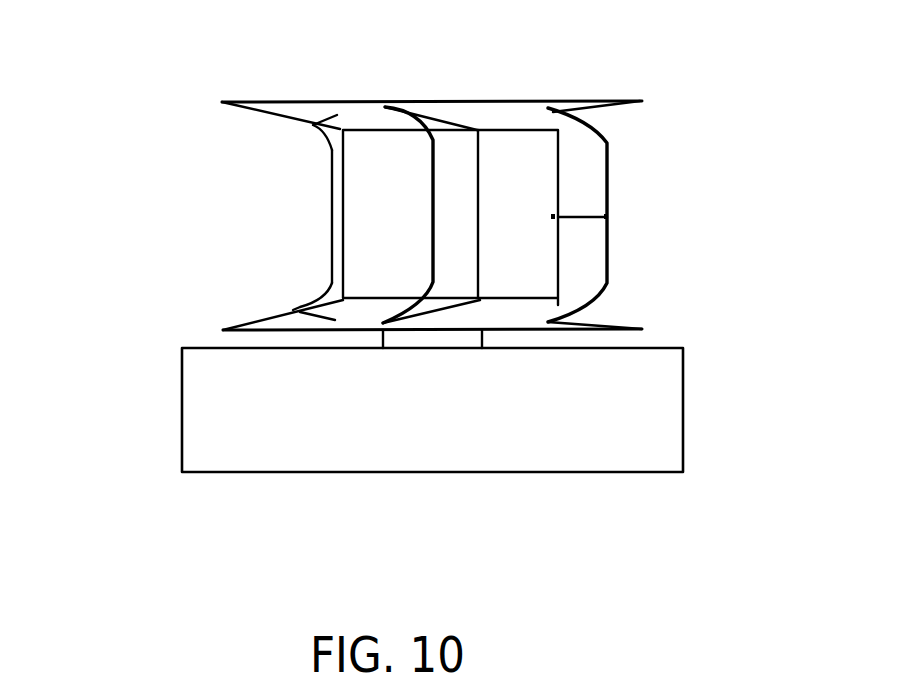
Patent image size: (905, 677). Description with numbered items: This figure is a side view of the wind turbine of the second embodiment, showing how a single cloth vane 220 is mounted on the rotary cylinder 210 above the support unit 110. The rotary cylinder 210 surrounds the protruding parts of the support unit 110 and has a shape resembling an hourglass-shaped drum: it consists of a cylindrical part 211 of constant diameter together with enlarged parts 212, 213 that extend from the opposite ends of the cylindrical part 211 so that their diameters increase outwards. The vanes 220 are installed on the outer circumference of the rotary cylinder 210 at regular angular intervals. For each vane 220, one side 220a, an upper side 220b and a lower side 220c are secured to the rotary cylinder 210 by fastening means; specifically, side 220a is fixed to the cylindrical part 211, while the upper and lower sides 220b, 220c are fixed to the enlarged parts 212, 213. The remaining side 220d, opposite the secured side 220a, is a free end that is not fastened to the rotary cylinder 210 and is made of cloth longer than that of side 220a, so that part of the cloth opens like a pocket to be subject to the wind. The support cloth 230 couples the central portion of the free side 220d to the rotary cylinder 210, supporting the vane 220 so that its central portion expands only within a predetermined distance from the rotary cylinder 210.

The support unit 110 is at (210, 418).
The rotary cylinder 210 is at (95, 118).
The cylindrical part 211 is at (362, 211).
The enlarged part 212 is at (310, 124).
The enlarged part 213 is at (290, 312).
The vane 220 is at (529, 274).
The one side of vane 220a is at (480, 195).
The upper side of vane 220b is at (477, 130).
The lower side of vane 220c is at (447, 300).
The remaining side of vane 220d is at (428, 190).
The support cloth 230 is at (580, 220).